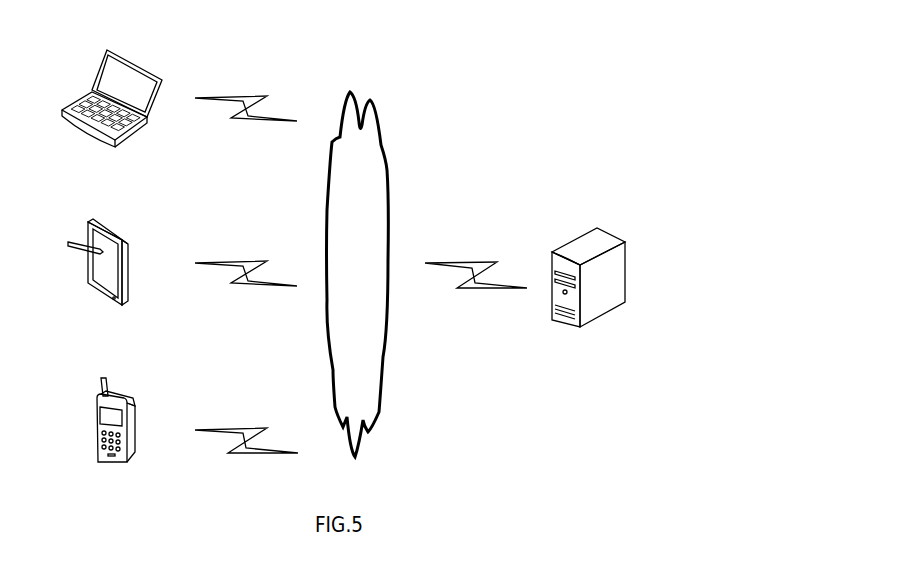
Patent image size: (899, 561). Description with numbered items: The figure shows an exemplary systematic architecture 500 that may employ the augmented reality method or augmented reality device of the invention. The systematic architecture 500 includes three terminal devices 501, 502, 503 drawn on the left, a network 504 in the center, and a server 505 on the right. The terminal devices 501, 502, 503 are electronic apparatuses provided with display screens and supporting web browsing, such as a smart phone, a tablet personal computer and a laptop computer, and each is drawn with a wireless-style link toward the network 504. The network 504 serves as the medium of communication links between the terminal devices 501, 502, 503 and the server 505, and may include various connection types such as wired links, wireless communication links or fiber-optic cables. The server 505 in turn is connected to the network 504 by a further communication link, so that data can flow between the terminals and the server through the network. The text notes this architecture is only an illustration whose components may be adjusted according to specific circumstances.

The systematic architecture 500 is at (523, 46).
The terminal device 501 is at (116, 433).
The terminal device 502 is at (98, 276).
The terminal device 503 is at (112, 111).
The network 504 is at (358, 274).
The server 505 is at (588, 292).